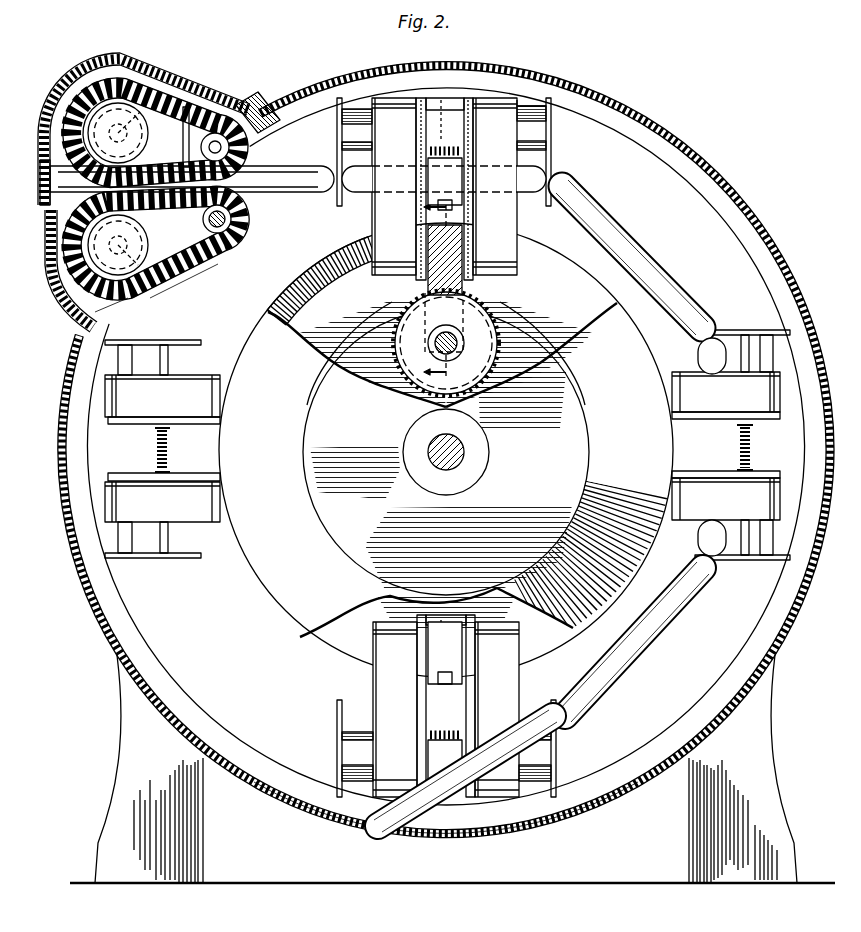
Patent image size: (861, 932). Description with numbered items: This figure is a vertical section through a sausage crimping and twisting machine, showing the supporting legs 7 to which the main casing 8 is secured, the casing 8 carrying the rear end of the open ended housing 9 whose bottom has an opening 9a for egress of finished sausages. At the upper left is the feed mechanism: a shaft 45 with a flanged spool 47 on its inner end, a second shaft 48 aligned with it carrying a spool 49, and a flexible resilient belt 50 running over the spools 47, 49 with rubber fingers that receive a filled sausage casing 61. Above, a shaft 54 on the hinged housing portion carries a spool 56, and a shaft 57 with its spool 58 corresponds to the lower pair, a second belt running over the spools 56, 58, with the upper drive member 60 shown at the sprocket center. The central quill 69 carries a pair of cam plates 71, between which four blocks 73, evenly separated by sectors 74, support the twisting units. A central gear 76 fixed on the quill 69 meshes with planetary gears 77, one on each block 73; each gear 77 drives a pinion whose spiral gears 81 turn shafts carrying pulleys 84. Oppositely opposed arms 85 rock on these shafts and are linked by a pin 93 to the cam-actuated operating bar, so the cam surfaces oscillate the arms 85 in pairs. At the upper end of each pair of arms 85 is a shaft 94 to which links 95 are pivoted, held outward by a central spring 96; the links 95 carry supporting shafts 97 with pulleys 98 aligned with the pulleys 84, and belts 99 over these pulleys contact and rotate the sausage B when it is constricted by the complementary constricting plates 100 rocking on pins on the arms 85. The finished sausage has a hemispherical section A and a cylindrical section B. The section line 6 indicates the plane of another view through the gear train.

The section line 6- 6 is at (443, 290).
The supporting legs 7 is at (190, 845).
The main casing 8 is at (648, 170).
The open ended housing 9 is at (735, 207).
The opening 9a is at (540, 825).
The shaft 45 is at (162, 282).
The flanged spool 47 is at (148, 240).
The second shaft 48 is at (232, 217).
The spool 49 is at (224, 246).
The flexible and resilient belt 50 is at (128, 295).
The shaft 54 is at (160, 95).
The spool 56 is at (88, 100).
The shaft 57 is at (252, 108).
The spool 58 is at (216, 133).
The upper drive sprocket 60 is at (120, 108).
The filled sausage casing 61 is at (290, 174).
The quill 69 is at (468, 452).
The cam plates 71 is at (282, 603).
The blocks 73 is at (470, 248).
The sectors 74 is at (525, 312).
The central gear 76 is at (420, 405).
The planetary gears 77 is at (480, 326).
The spiral gears 81 is at (418, 310).
The pulleys 84 is at (332, 250).
The arms 85 is at (358, 98).
The pin 93 is at (445, 471).
The shaft 94 is at (548, 152).
The links 95 is at (462, 100).
The central spring 96 is at (452, 147).
The supporting shafts 97 is at (552, 106).
The pulleys 98 is at (522, 98).
The belts 99 is at (190, 385).
The constricting plates 100 is at (337, 135).
The hemispherical section A is at (712, 572).
The cylindrical section B is at (640, 648).